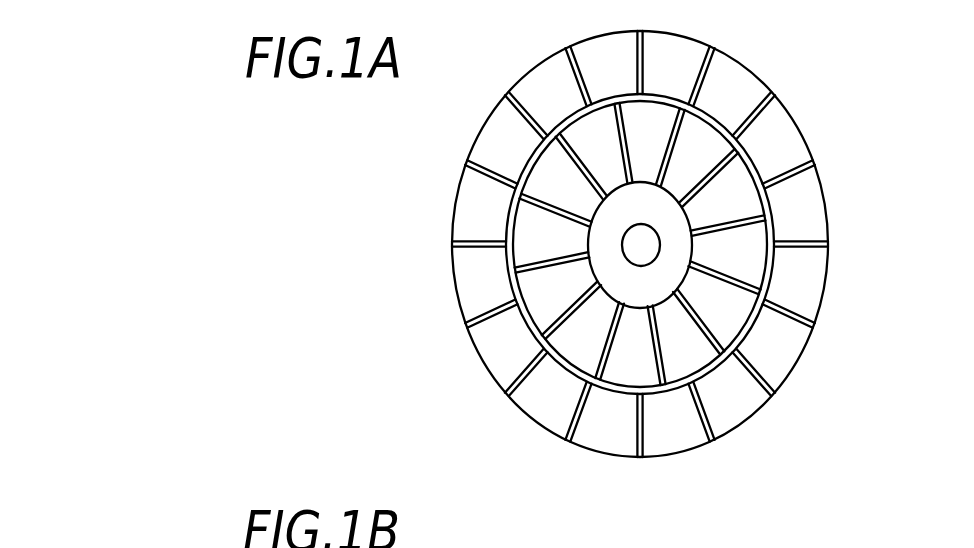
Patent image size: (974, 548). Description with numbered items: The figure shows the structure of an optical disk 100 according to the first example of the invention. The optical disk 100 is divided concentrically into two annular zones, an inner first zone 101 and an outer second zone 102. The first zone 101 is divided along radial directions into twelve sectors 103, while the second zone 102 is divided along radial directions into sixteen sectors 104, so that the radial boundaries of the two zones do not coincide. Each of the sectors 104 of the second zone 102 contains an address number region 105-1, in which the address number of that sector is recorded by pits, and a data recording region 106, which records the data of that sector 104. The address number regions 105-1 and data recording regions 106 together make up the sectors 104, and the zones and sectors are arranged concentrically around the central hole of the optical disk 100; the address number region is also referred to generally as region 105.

In FIG. 1A, the optical disk 100 is at (421, 188).
In FIG. 1A, the first zone 101 is at (759, 152).
In FIG. 1A, the second zone 102 is at (826, 287).
In FIG. 1A, the sector 103 is at (703, 132).
In FIG. 1A, the sector 104 is at (806, 208).
In FIG. 1A, the address number region 105-1 is at (639, 458).
In FIG. 1A, the data recording region 106 is at (673, 433).
In FIG. 1B, the outer radial slot 105 is at (943, 541).